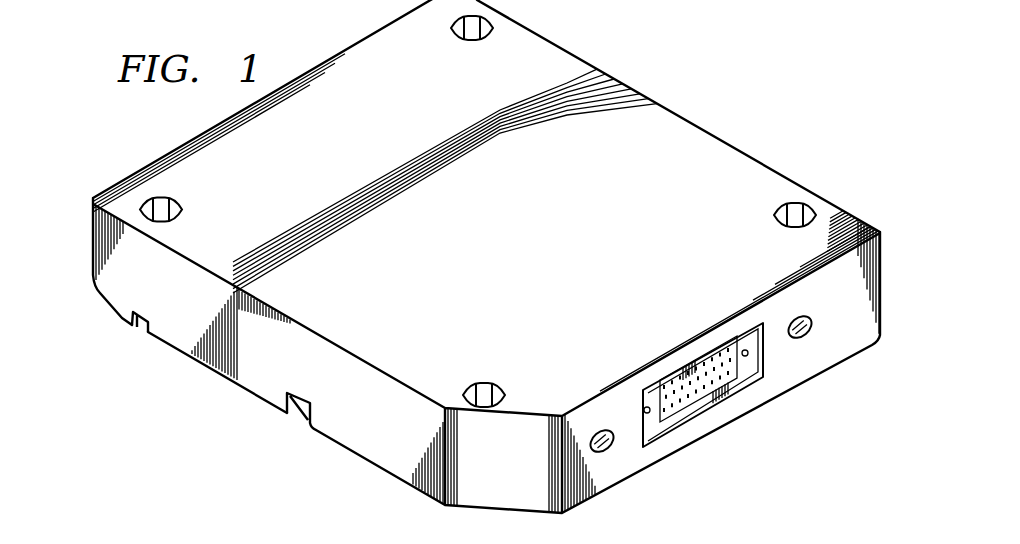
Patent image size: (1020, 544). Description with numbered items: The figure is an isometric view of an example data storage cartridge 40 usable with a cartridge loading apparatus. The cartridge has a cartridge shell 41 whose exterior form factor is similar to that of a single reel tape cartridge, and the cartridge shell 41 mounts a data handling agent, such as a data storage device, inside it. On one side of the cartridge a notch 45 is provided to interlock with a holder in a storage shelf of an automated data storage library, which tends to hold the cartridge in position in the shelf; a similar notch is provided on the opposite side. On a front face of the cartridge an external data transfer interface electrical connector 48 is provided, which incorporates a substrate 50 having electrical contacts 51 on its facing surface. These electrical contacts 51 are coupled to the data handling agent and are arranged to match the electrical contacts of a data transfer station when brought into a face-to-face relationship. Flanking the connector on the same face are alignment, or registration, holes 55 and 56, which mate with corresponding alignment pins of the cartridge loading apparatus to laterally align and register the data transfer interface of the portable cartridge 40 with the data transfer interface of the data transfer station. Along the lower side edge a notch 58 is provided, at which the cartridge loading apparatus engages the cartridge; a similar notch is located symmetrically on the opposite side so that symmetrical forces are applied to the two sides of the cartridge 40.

The data storage cartridge 40 is at (665, 62).
The cartridge shell 41 is at (563, 60).
The notch 45 is at (141, 332).
The external data transfer interface electrical connector 48 is at (745, 411).
The substrate 50 is at (681, 414).
The electrical contacts 51 is at (698, 411).
The alignment hole 55 is at (612, 458).
The alignment hole 56 is at (813, 325).
The notch 58 is at (304, 418).